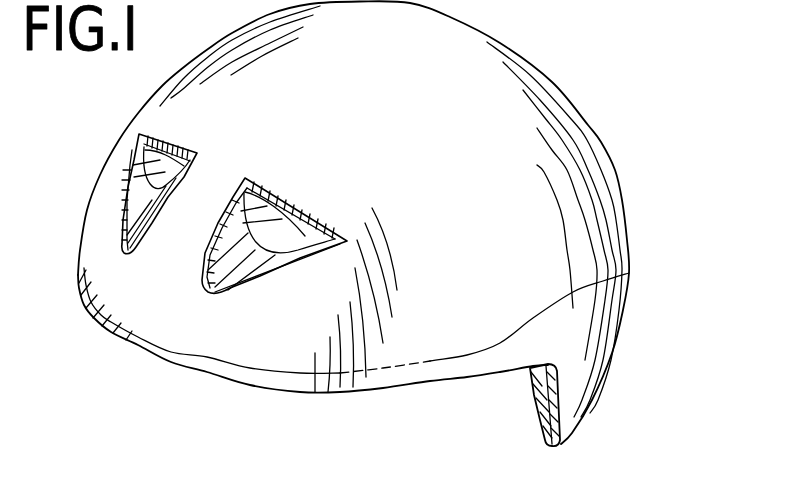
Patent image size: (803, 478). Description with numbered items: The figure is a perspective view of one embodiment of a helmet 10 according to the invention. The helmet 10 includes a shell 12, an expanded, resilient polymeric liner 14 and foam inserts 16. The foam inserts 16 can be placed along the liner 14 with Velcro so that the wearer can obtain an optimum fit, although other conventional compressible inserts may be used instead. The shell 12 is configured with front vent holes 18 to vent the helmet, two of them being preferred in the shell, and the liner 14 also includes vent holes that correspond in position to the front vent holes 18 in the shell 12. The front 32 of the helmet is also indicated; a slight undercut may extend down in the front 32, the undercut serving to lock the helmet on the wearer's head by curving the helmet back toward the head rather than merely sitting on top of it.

The helmet 10 is at (588, 101).
The shell 12 is at (591, 336).
The liner 14 is at (537, 422).
The foam inserts 16 is at (530, 403).
The front vent holes 18 is at (165, 165).
The front 32 is at (133, 338).